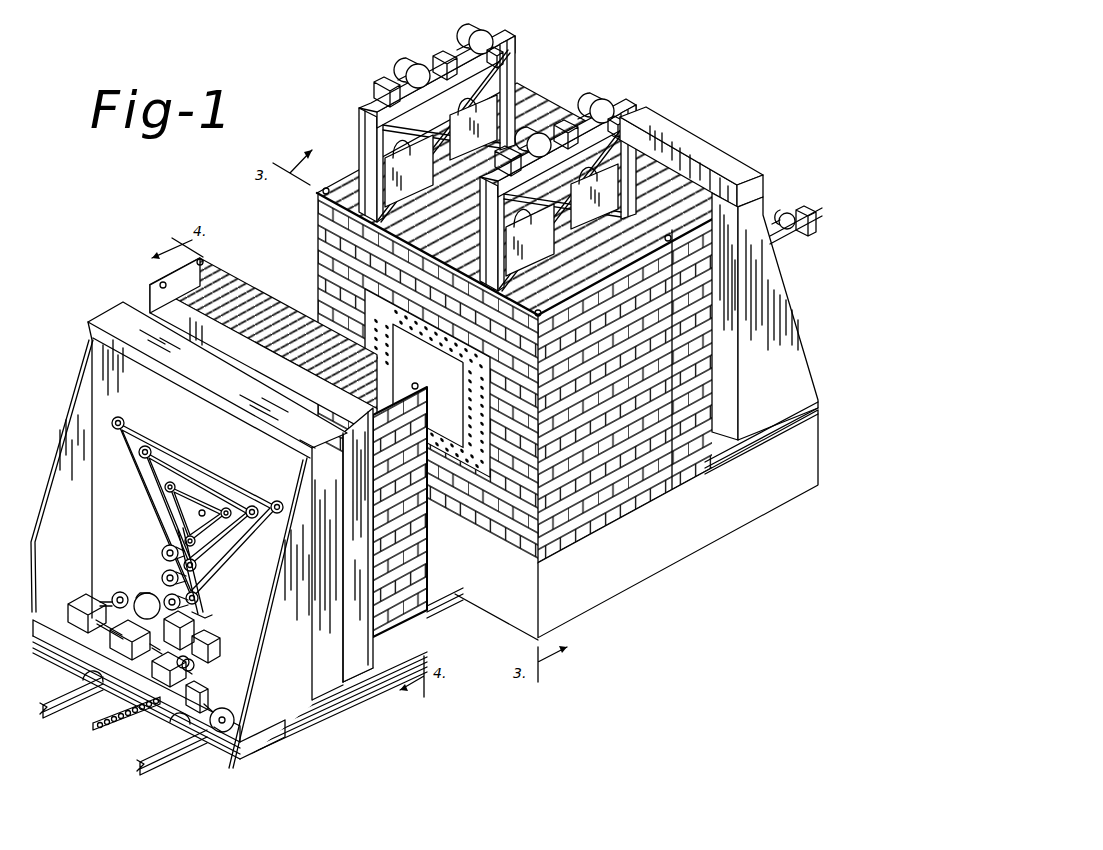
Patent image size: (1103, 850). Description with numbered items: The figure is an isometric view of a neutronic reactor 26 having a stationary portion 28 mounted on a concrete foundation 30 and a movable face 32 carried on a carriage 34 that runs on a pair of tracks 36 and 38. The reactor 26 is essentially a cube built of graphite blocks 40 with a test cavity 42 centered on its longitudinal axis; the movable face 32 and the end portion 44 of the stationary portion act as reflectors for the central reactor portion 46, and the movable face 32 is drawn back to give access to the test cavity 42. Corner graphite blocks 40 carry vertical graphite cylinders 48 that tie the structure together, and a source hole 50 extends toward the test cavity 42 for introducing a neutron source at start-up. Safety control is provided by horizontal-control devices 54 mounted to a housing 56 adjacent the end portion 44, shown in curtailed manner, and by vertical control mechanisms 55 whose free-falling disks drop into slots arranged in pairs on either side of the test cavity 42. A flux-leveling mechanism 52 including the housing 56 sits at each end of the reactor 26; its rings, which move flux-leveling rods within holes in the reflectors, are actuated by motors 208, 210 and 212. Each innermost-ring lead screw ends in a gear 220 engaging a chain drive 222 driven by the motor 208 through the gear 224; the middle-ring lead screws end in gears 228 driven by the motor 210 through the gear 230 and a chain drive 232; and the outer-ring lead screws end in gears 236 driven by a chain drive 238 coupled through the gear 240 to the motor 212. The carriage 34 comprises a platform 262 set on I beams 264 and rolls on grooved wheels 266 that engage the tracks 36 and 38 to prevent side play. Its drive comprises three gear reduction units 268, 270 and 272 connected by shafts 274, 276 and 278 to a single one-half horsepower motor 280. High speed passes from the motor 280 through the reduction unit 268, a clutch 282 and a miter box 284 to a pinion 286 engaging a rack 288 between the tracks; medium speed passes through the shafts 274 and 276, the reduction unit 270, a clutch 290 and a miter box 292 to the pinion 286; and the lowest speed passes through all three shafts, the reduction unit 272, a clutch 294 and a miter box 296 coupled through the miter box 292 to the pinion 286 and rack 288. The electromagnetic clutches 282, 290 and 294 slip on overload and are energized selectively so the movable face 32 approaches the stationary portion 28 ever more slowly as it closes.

The reactor 26 is at (717, 97).
The stationary portion 28 is at (628, 399).
The concrete foundation 30 is at (708, 533).
The movable face 32 is at (247, 303).
The carriage 34 is at (300, 730).
The track 36 is at (45, 710).
The track 38 is at (143, 767).
The graphite blocks 40 is at (645, 493).
The test cavity 42 is at (432, 369).
The end portion 44 is at (698, 472).
The central reactor portion 46 is at (615, 511).
The graphite cylinders 48 is at (322, 196).
The source hole 50 is at (612, 458).
The flux-leveling mechanism 52 is at (143, 303).
The horizontal-control device 54 is at (793, 197).
The vertical control mechanism 55 is at (516, 55).
The housing 56 is at (334, 427).
The motor 208 is at (162, 553).
The motor 210 is at (162, 578).
The motor 212 is at (170, 598).
The gear 220 is at (166, 490).
The chain drive 222 is at (172, 510).
The gear 224 is at (186, 539).
The gear 228 is at (142, 454).
The gear 230 is at (196, 567).
The chain drive 232 is at (152, 485).
The gear 236 is at (120, 419).
The chain drive 238 is at (150, 434).
The gear 240 is at (199, 597).
The platform 262 is at (247, 688).
The I beams 264 is at (223, 757).
The grooved wheels 266 is at (82, 681).
The gear reduction unit 268 is at (174, 678).
The gear reduction unit 270 is at (110, 646).
The gear reduction unit 272 is at (76, 631).
The shaft 274 is at (185, 715).
The shaft 276 is at (140, 694).
The shaft 278 is at (108, 640).
The motor 280 is at (233, 712).
The clutch 282 is at (200, 668).
The miter box 284 is at (217, 645).
The pinion 286 is at (193, 637).
The rack 288 is at (97, 737).
The clutch 290 is at (122, 594).
The miter box 292 is at (204, 614).
The clutch 294 is at (104, 600).
The miter box 296 is at (112, 596).